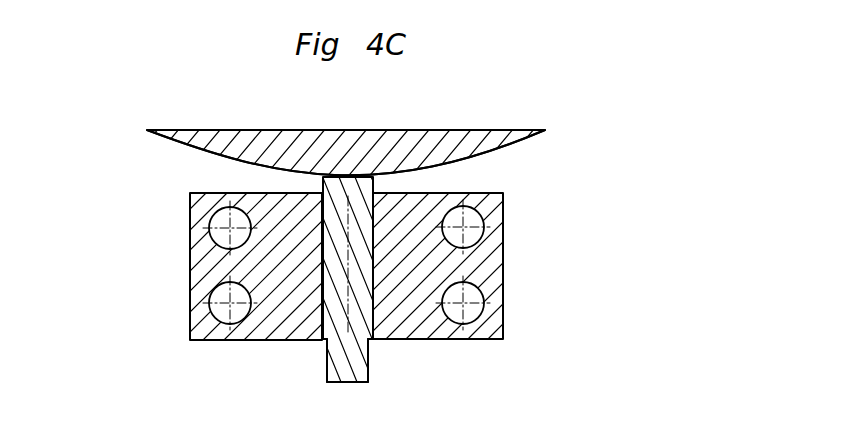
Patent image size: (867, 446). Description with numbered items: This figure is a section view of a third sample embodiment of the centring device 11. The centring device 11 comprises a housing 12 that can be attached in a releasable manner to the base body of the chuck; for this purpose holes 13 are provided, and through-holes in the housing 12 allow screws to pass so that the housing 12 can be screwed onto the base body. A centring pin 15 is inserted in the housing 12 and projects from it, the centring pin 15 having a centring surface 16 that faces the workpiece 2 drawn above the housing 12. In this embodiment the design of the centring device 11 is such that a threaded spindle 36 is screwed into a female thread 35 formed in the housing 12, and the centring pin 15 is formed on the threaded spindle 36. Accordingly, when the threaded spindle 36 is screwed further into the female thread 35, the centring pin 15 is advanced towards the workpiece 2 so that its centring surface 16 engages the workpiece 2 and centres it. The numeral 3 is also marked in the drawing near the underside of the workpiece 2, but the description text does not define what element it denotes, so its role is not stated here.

The workpiece 2 is at (462, 148).
The lens lower surface 3 is at (512, 143).
The centring device 11 is at (615, 178).
The housing 12 is at (413, 308).
The holes 13 is at (218, 316).
The centring pin 15 is at (335, 212).
The centring surface 16 is at (383, 150).
The female thread 35 is at (330, 283).
The threaded spindle 36 is at (372, 343).